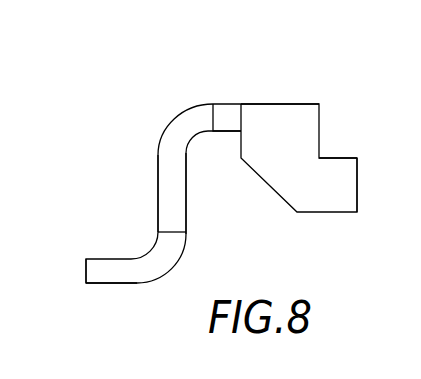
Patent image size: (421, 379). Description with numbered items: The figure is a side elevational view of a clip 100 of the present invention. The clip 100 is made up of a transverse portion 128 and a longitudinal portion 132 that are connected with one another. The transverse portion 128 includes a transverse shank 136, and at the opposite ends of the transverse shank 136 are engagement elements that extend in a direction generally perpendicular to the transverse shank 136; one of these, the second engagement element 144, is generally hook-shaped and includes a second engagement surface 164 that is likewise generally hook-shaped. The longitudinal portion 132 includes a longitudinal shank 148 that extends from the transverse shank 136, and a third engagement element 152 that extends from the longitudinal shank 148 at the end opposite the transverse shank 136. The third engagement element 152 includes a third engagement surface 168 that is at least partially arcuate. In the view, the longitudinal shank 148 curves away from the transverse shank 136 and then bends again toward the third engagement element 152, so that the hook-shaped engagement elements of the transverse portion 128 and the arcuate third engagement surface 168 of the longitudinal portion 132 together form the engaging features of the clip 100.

The clip 100 is at (206, 94).
The transverse portion 128 is at (258, 94).
The longitudinal portion 132 is at (150, 165).
The transverse shank 136 is at (297, 104).
The second engagement element 144 is at (357, 185).
The longitudinal shank 148 is at (188, 197).
The third engagement element 152 is at (97, 284).
The second engagement surface 164 is at (343, 158).
The third engagement surface 168 is at (116, 284).